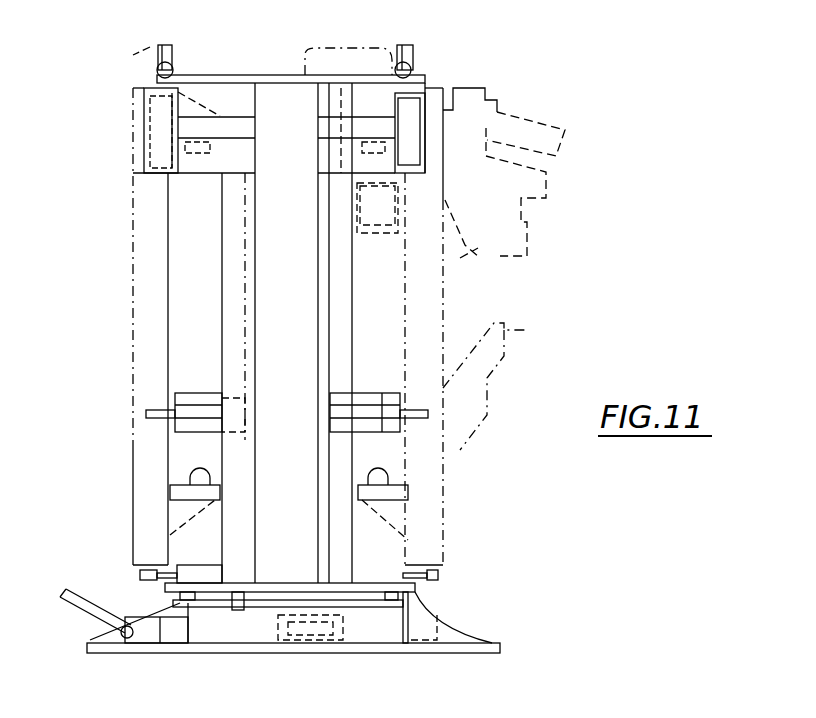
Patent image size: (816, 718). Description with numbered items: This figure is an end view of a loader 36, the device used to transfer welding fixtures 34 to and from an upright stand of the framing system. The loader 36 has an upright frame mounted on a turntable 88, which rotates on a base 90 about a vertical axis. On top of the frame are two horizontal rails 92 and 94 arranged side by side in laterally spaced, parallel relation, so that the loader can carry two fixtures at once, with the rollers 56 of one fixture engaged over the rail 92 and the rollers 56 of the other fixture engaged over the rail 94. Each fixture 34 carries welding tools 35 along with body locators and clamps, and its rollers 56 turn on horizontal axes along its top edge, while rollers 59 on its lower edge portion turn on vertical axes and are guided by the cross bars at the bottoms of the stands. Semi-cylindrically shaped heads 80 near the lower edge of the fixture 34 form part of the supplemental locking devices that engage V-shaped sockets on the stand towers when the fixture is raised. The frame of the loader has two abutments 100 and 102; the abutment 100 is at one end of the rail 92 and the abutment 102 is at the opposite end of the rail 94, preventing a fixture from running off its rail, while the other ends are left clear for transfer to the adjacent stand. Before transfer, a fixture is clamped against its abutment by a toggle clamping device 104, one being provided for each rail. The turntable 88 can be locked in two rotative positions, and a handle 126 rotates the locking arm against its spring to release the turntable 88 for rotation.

The fixture 34 is at (133, 344).
The welding tool 35 is at (525, 322).
The loader 36 is at (215, 260).
The roller 56 is at (167, 48).
The roller 59 is at (140, 575).
The semi-cylindrically shaped head 80 is at (195, 478).
The turntable 88 is at (268, 603).
The base 90 is at (335, 652).
The horizontal rail 92 is at (162, 69).
The horizontal rail 94 is at (408, 72).
The abutment 100 is at (160, 143).
The abutment 102 is at (425, 128).
The toggle clamping device 104 is at (186, 392).
The handle 126 is at (82, 614).